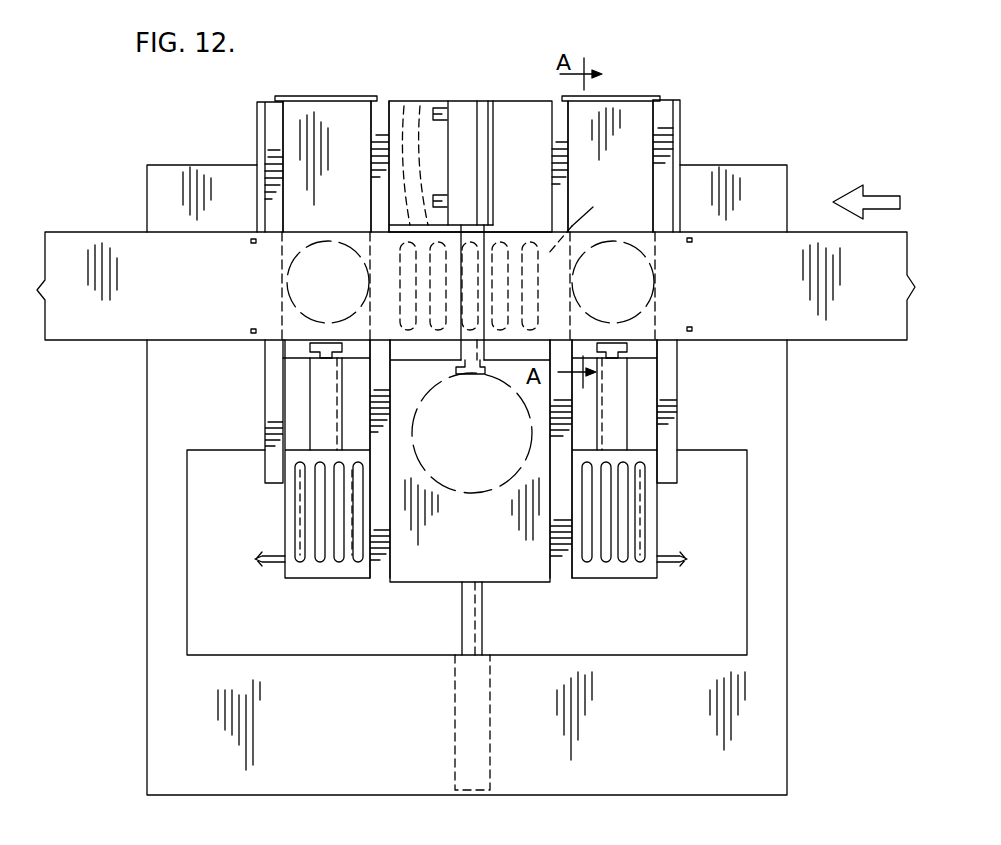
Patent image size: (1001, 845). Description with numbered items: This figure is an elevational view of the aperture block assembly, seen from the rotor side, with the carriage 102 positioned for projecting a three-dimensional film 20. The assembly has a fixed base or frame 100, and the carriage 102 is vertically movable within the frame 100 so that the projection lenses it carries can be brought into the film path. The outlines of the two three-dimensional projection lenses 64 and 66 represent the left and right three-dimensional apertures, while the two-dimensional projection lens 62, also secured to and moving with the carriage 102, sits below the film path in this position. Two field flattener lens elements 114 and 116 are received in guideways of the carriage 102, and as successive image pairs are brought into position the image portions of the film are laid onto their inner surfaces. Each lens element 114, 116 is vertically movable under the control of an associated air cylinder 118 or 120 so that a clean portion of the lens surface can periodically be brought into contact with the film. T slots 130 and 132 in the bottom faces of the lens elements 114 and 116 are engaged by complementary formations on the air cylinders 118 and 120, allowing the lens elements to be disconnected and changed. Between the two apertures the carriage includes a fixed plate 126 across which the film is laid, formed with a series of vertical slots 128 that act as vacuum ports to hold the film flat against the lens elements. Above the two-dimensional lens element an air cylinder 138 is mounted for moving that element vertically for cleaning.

The 3-D film 20 is at (873, 322).
The 2-D projection lens 62 is at (498, 486).
The left 3-D projection lens 64 is at (289, 259).
The right 3-D projection lens 66 is at (652, 256).
The frame 100 is at (791, 740).
The carriage 102 is at (680, 100).
The field flattener lens element 114 is at (338, 122).
The field flattener lens element 116 is at (626, 116).
The air cylinder 118 is at (305, 408).
The air cylinder 120 is at (632, 398).
The fixed plate 126 is at (593, 219).
The vertical slots 128 is at (420, 102).
The T slot 130 is at (308, 348).
The T slot 132 is at (636, 347).
The air cylinder 138 is at (498, 130).